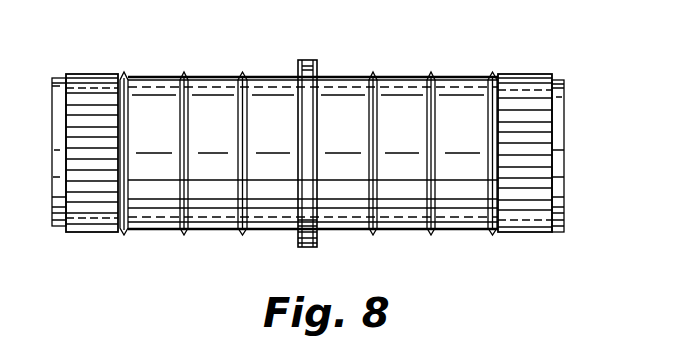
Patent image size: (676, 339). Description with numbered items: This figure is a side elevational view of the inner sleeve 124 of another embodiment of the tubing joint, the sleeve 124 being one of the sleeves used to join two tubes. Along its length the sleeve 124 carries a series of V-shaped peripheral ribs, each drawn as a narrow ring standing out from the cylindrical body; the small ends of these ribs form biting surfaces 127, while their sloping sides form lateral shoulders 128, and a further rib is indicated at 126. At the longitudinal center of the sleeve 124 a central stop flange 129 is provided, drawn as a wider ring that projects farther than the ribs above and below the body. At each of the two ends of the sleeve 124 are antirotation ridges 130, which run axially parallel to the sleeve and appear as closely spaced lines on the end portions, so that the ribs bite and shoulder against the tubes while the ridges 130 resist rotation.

The inner sleeve 124 is at (457, 80).
The ring 126 is at (184, 73).
The biting surfaces 127 is at (242, 74).
The lateral shoulders 128 is at (373, 77).
The central stop flange 129 is at (304, 60).
The antirotation ridges 130 is at (82, 73).